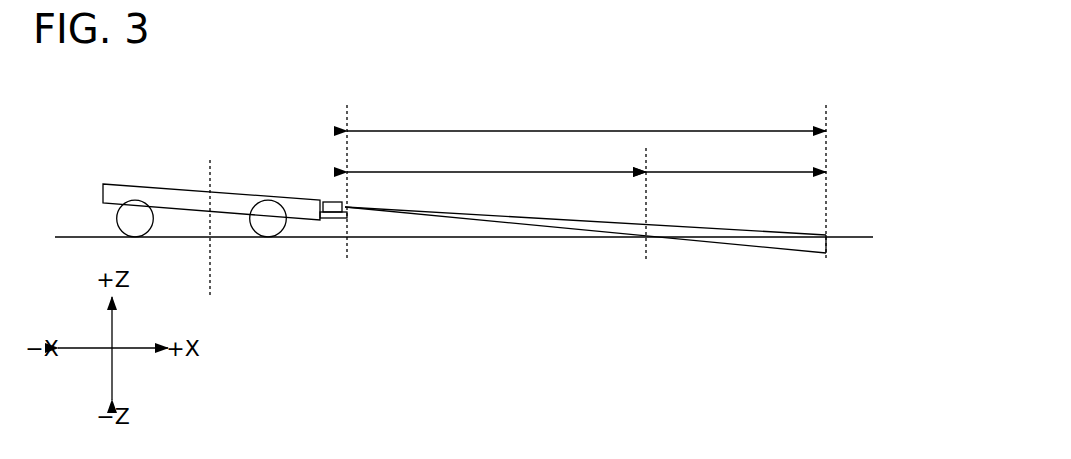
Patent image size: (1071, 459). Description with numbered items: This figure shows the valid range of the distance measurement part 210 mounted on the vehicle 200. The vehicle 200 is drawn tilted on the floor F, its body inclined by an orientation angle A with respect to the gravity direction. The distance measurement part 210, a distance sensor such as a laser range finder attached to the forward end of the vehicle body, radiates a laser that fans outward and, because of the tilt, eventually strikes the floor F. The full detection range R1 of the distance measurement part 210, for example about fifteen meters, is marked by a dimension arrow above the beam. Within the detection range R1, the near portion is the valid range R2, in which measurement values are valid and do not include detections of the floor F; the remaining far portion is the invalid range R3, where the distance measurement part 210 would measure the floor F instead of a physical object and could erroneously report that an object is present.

The vehicle 200 is at (170, 168).
The distance measurement part 210 is at (330, 200).
The detection range R1 is at (586, 115).
The valid range R2 is at (496, 155).
The invalid range R3 is at (736, 155).
The floor F is at (464, 251).
The orientation angle A is at (197, 229).